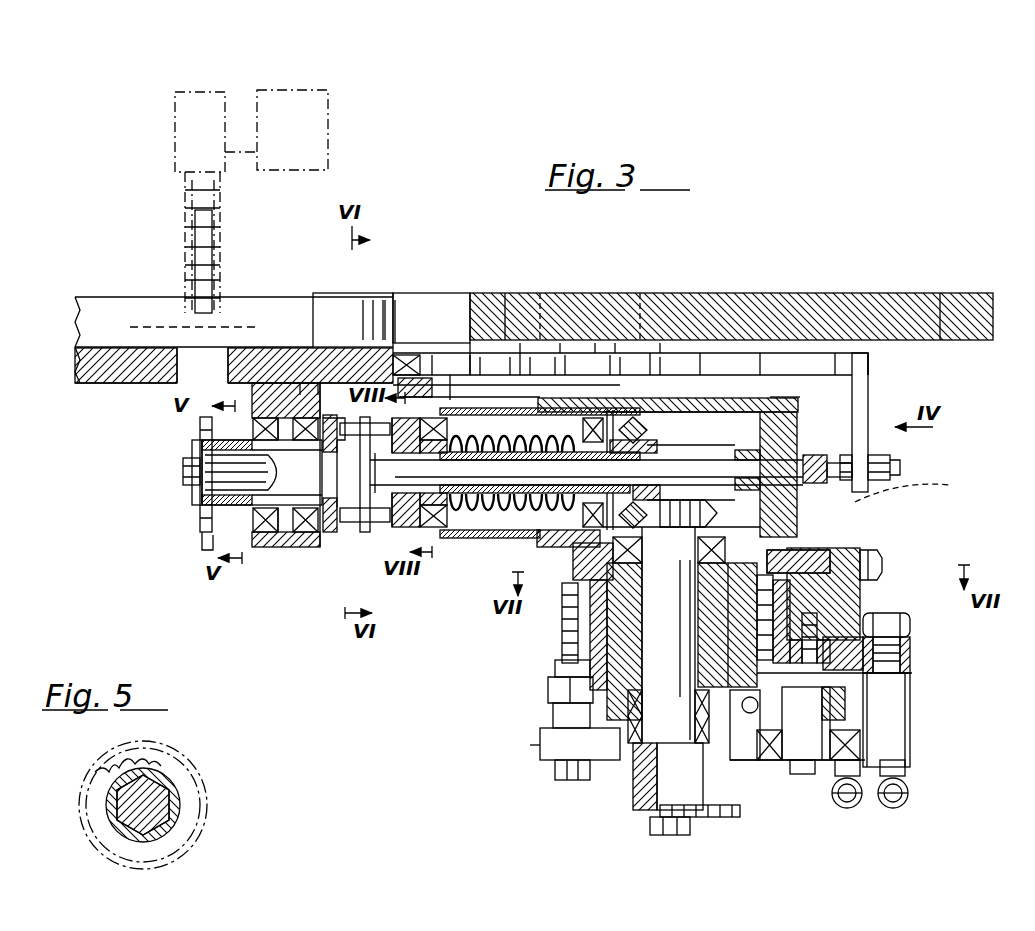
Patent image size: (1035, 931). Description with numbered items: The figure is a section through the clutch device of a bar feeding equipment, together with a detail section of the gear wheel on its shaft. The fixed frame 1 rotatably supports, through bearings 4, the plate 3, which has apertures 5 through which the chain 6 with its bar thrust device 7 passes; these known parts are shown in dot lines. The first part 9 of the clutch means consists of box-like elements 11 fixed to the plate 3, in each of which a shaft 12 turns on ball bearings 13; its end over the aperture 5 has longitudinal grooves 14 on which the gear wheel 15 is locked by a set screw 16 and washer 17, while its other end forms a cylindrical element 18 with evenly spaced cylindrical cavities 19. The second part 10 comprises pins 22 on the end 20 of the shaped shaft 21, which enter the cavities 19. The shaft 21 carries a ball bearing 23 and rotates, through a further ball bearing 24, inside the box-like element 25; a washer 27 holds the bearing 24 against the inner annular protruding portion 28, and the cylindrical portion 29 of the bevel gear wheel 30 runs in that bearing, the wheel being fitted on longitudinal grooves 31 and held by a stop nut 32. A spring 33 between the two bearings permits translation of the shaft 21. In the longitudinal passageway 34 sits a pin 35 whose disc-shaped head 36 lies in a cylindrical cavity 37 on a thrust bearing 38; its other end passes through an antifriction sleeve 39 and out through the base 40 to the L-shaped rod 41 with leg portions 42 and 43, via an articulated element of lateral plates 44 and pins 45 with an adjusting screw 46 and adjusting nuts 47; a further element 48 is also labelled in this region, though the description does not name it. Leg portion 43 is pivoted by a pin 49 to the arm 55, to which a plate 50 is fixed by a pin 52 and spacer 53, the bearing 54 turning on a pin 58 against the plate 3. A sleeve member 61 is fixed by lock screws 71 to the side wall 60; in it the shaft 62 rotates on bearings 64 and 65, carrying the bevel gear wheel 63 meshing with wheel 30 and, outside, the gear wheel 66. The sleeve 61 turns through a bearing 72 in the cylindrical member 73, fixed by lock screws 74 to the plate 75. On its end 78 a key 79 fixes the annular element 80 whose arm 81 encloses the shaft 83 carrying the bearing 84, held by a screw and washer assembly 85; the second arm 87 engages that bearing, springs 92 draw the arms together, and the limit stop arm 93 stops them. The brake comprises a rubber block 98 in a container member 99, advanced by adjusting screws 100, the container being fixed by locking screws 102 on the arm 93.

In FIG. 3, the fixed frame 1 is at (985, 300).
In FIG. 3, the plate 3 is at (95, 348).
In FIG. 3, the bearings 4 is at (338, 297).
In FIG. 3, the apertures 5 is at (192, 348).
In FIG. 3, the chain 6 is at (188, 232).
In FIG. 3, the bar thrust device 7 is at (320, 140).
In FIG. 3, the first part of the clutch means 9 is at (265, 560).
In FIG. 3, the second part of the clutch means 10 is at (435, 547).
In FIG. 3, the box-like elements 11 is at (252, 547).
In FIG. 3, the shaft 12 is at (312, 483).
In FIG. 3, the ball bearings 13 is at (300, 395).
In FIG. 3, the longitudinal grooves 14 is at (225, 470).
In FIG. 5, the longitudinal grooves 14 is at (120, 825).
In FIG. 3, the gear wheel 15 is at (205, 425).
In FIG. 5, the gear wheel 15 is at (100, 768).
In FIG. 3, the set screw 16 is at (185, 470).
In FIG. 3, the washer 17 is at (198, 500).
In FIG. 3, the cylindrical element 18 is at (318, 395).
In FIG. 3, the cylindrical cavities 19 is at (380, 527).
In FIG. 3, the end of shaped shaft 20 is at (353, 320).
In FIG. 3, the shaped shaft 21 is at (372, 547).
In FIG. 3, the studs or pins 22 is at (360, 547).
In FIG. 3, the ball bearing 23 is at (450, 400).
In FIG. 3, the ball bearing 24 is at (645, 355).
In FIG. 3, the box-like element 25 is at (765, 372).
In FIG. 3, the washer 27 is at (615, 348).
In FIG. 3, the inner annular protruding portion 28 is at (655, 362).
In FIG. 3, the cylindrical portion 29 is at (545, 555).
In FIG. 3, the bevel gear wheel 30 is at (660, 348).
In FIG. 3, the longitudinal grooves 31 is at (500, 530).
In FIG. 3, the stop nut 32 is at (700, 352).
In FIG. 3, the spring 33 is at (520, 382).
In FIG. 3, the longitudinal passageway 34 is at (505, 345).
In FIG. 3, the pin 35 is at (735, 462).
In FIG. 3, the disc-shaped head 36 is at (208, 552).
In FIG. 3, the cylindrical cavity 37 is at (586, 471).
In FIG. 3, the thrust bearing 38 is at (358, 474).
In FIG. 3, the antifriction sleeve 39 is at (835, 372).
In FIG. 3, the base 40 is at (882, 362).
In FIG. 3, the rod 41 is at (930, 340).
In FIG. 3, the leg portion 42 is at (870, 378).
In FIG. 3, the leg portion 43 is at (770, 397).
In FIG. 3, the lateral plates 44 is at (818, 485).
In FIG. 3, the pins 45 is at (860, 412).
In FIG. 3, the adjusting screw 46 is at (900, 468).
In FIG. 3, the adjusting nuts 47 is at (875, 462).
In FIG. 3, the slide block 48 is at (595, 348).
In FIG. 3, the pin 49 is at (640, 300).
In FIG. 3, the plate 50 is at (385, 330).
In FIG. 3, the pin 52 is at (540, 345).
In FIG. 3, the spacer 53 is at (560, 352).
In FIG. 3, the bearing 54 is at (470, 348).
In FIG. 3, the arm 55 is at (395, 340).
In FIG. 3, the pin 58 is at (415, 378).
In FIG. 3, the side wall 60 is at (480, 562).
In FIG. 3, the sleeve member 61 is at (560, 600).
In FIG. 3, the shaft 62 is at (682, 666).
In FIG. 3, the bevel gear wheel 63 is at (680, 530).
In FIG. 3, the bearing 64 is at (640, 780).
In FIG. 3, the bearing 65 is at (560, 580).
In FIG. 3, the gear wheel 66 is at (722, 815).
In FIG. 3, the lock screws 71 is at (850, 545).
In FIG. 3, the bearing 72 is at (540, 745).
In FIG. 3, the cylindrical member 73 is at (915, 650).
In FIG. 3, the lock screws 74 is at (565, 660).
In FIG. 3, the plate 75 is at (552, 690).
In FIG. 3, the end of sleeve member 78 is at (578, 728).
In FIG. 3, the key 79 is at (745, 725).
In FIG. 3, the annular element 80 is at (560, 765).
In FIG. 3, the arm 81 is at (770, 765).
In FIG. 3, the shaft 83 is at (860, 717).
In FIG. 3, the bearing 84 is at (905, 759).
In FIG. 3, the screw and washer assembly 85 is at (805, 778).
In FIG. 3, the second arm 87 is at (545, 745).
In FIG. 3, the springs 92 is at (885, 805).
In FIG. 3, the limit stop arm 93 is at (912, 734).
In FIG. 3, the rubber block 98 is at (835, 560).
In FIG. 3, the container member 99 is at (910, 622).
In FIG. 3, the adjusting screws 100 is at (885, 565).
In FIG. 3, the locking screws 102 is at (912, 678).